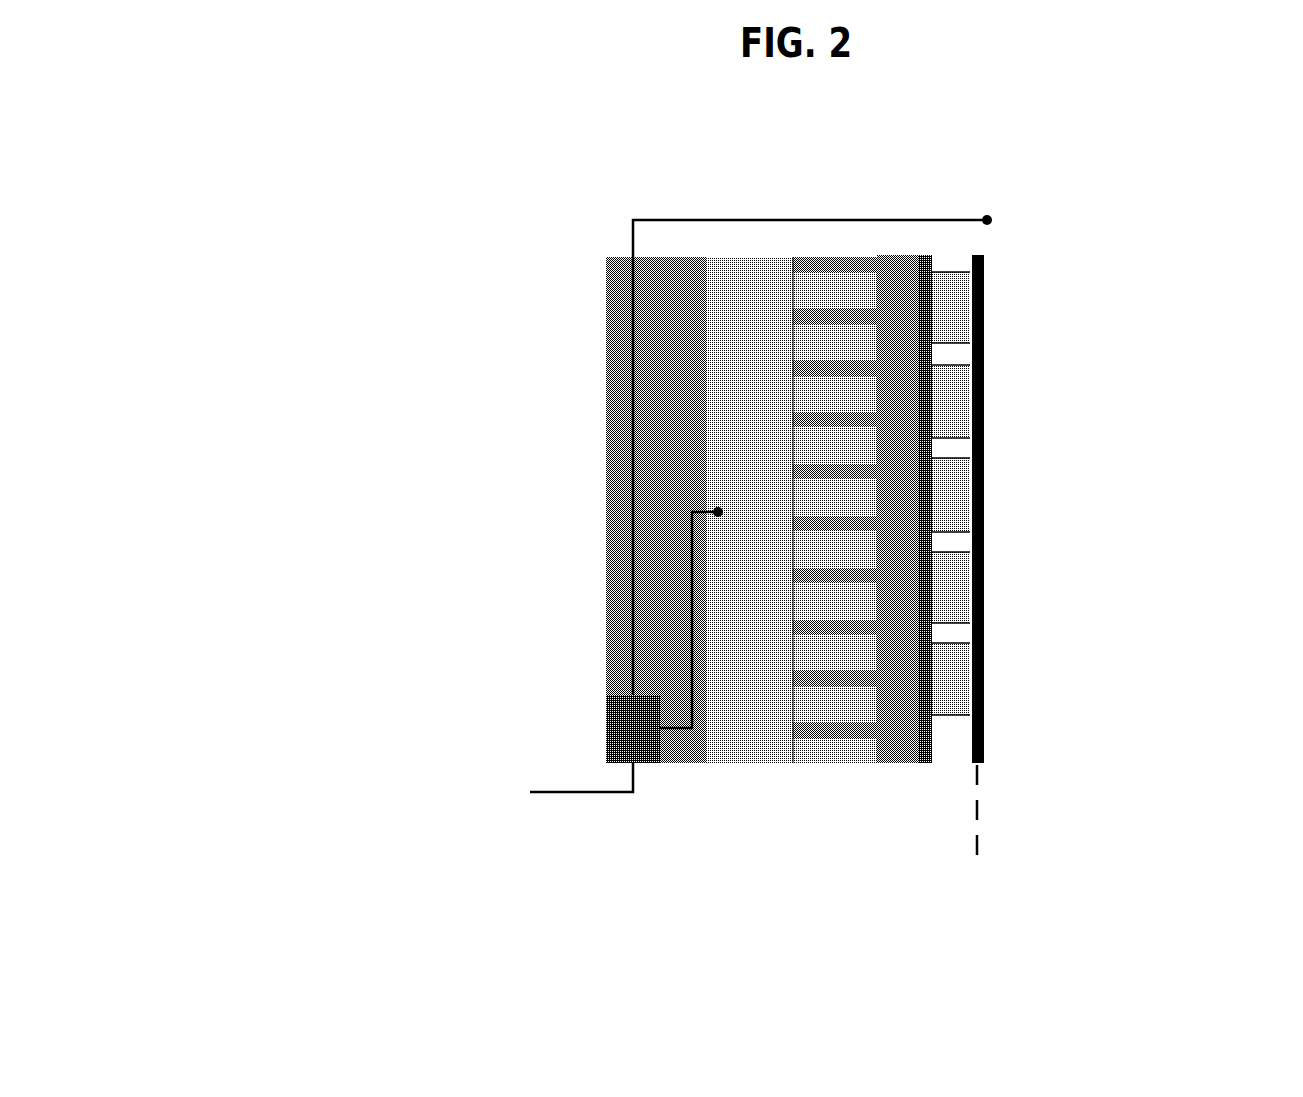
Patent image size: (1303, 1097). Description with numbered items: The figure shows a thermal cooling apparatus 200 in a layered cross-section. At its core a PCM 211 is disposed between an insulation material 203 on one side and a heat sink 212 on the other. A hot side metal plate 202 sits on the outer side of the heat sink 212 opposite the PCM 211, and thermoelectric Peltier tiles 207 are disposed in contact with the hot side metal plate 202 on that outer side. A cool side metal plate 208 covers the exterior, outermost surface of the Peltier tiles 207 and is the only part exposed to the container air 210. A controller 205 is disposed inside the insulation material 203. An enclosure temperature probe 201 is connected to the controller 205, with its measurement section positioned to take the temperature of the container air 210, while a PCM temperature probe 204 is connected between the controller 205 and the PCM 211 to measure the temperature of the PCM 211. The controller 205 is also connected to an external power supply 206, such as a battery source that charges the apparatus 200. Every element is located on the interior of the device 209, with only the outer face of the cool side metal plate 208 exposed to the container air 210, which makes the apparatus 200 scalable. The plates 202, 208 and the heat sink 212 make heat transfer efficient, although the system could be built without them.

The thermal cooling apparatus 200 is at (772, 189).
The enclosure temperature probe 201 is at (627, 242).
The hot side metal plate 202 is at (793, 318).
The insulation material 203 is at (614, 466).
The PCM temperature probe 204 is at (677, 577).
The controller 205 is at (606, 732).
The external power supply 206 is at (400, 803).
The Peltier tiles 207 is at (958, 542).
The cool side metal plate 208 is at (992, 380).
The interior of the device 209 is at (766, 564).
The container air 210 is at (1138, 810).
The PCM 211 is at (745, 555).
The heat sink 212 is at (870, 395).